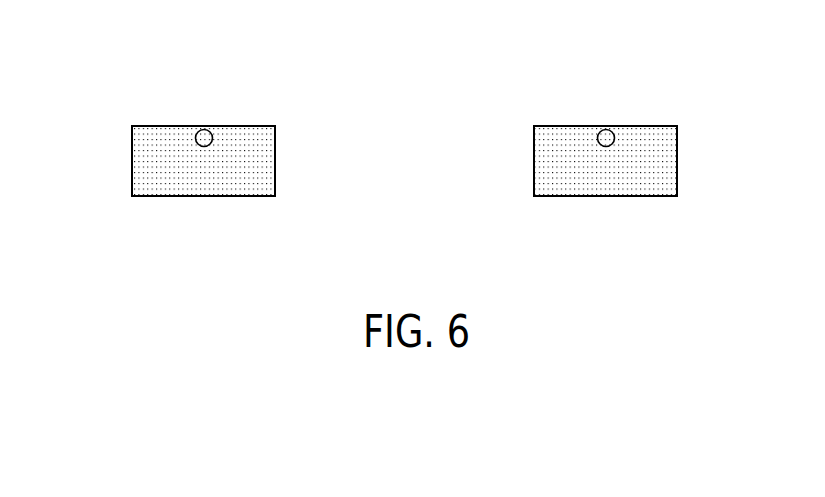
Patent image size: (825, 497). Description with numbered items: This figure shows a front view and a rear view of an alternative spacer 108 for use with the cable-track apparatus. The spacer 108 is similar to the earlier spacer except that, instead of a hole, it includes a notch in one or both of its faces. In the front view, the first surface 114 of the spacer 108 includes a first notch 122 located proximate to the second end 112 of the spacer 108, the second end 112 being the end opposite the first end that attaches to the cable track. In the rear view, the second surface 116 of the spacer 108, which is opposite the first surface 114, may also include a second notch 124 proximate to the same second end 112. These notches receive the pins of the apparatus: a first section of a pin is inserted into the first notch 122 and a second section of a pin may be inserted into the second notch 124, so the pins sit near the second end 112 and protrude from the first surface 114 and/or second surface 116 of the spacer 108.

The spacer 108 is at (422, 113).
The second end 112 is at (253, 126).
The first surface 114 is at (258, 192).
The second surface 116 is at (669, 192).
The first notch 122 is at (204, 130).
The second notch 124 is at (606, 130).